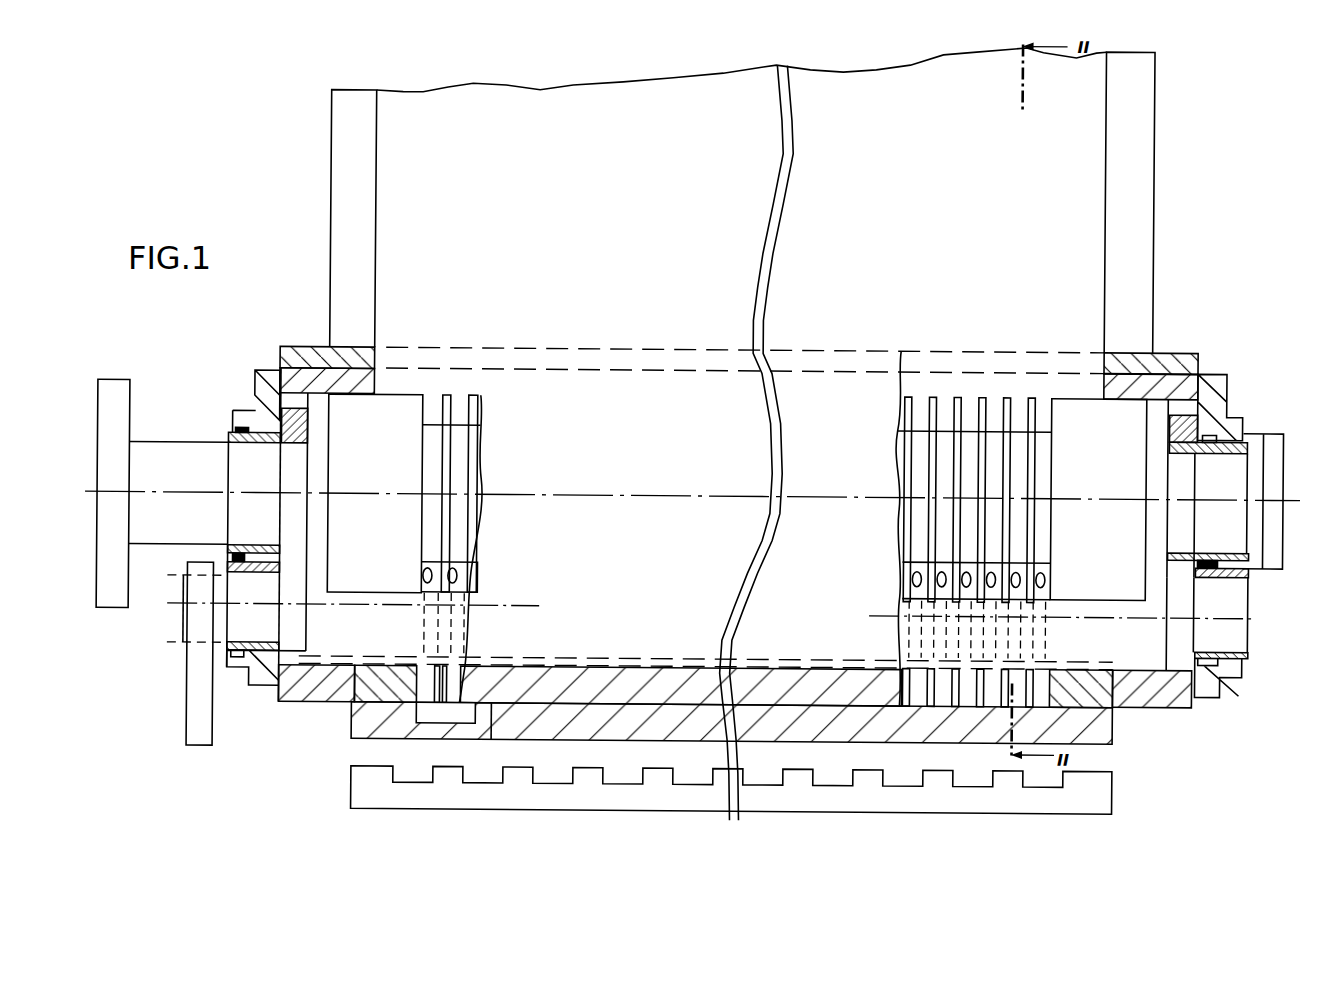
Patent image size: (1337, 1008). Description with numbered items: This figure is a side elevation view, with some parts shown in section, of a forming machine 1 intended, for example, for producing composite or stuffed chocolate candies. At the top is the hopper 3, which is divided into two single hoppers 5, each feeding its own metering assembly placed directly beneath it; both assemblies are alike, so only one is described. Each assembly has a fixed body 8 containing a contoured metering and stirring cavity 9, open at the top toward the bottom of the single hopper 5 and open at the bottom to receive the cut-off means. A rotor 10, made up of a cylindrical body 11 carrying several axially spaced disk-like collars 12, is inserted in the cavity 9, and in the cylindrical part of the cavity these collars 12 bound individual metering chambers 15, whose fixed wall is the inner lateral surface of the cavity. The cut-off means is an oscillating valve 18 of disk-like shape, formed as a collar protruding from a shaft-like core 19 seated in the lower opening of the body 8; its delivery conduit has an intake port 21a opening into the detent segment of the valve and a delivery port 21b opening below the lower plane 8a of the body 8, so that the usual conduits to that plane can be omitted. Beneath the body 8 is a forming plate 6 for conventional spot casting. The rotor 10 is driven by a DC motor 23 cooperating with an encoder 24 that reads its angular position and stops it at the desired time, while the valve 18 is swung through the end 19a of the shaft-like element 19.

The forming machine 1 is at (1160, 196).
The hopper 3 is at (325, 254).
The single hopper 5 is at (592, 224).
The forming plate 6 is at (370, 728).
The fixed body 8 is at (308, 374).
The lower plane 8a is at (402, 670).
The metering and stirring cavity 9 is at (474, 445).
The rotor 10 is at (962, 404).
The cylindrical body 11 is at (478, 460).
The collar 12 is at (480, 397).
The metering chamber 15 is at (432, 456).
The oscillating valve 18 is at (462, 570).
The shaft-like core 19 is at (427, 607).
The end of shaft-like element 19a is at (184, 633).
The intake port 21a is at (469, 577).
The delivery port 21b is at (463, 680).
The DC motor 23 is at (118, 424).
The encoder 24 is at (1258, 436).